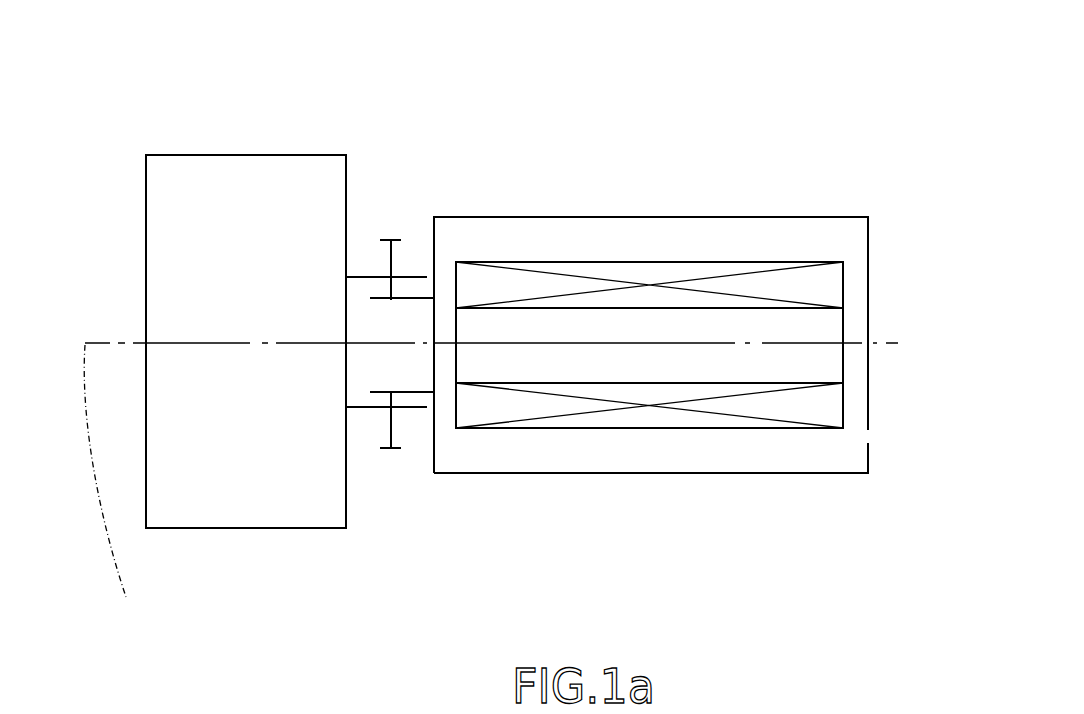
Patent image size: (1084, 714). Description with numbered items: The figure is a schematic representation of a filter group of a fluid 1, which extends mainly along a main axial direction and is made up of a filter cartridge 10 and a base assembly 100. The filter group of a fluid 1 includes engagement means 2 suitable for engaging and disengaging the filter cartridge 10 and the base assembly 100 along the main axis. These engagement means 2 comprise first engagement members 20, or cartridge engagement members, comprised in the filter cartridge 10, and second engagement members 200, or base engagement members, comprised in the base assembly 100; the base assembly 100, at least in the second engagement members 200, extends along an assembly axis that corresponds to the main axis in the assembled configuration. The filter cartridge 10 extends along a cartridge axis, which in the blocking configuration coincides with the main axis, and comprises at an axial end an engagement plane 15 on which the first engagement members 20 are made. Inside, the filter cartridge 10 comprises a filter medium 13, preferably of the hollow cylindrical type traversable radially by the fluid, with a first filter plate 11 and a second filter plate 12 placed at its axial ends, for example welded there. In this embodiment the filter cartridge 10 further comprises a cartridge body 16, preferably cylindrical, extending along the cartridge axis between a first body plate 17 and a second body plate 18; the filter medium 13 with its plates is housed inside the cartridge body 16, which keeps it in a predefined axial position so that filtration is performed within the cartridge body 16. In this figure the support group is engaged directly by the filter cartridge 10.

The filter group of a fluid 1 is at (168, 85).
The base assembly 100 is at (117, 247).
The second engagement members 200 is at (365, 265).
The engagement means 2 is at (382, 502).
The first engagement members 20 is at (408, 397).
The filter cartridge 10 is at (562, 186).
The first filter plate 11 is at (456, 428).
The second filter plate 12 is at (843, 413).
The filter medium 13 is at (683, 450).
The engagement plane 15 is at (460, 285).
The cartridge body 16 is at (758, 205).
The first body plate 17 is at (434, 243).
The second body plate 18 is at (868, 254).